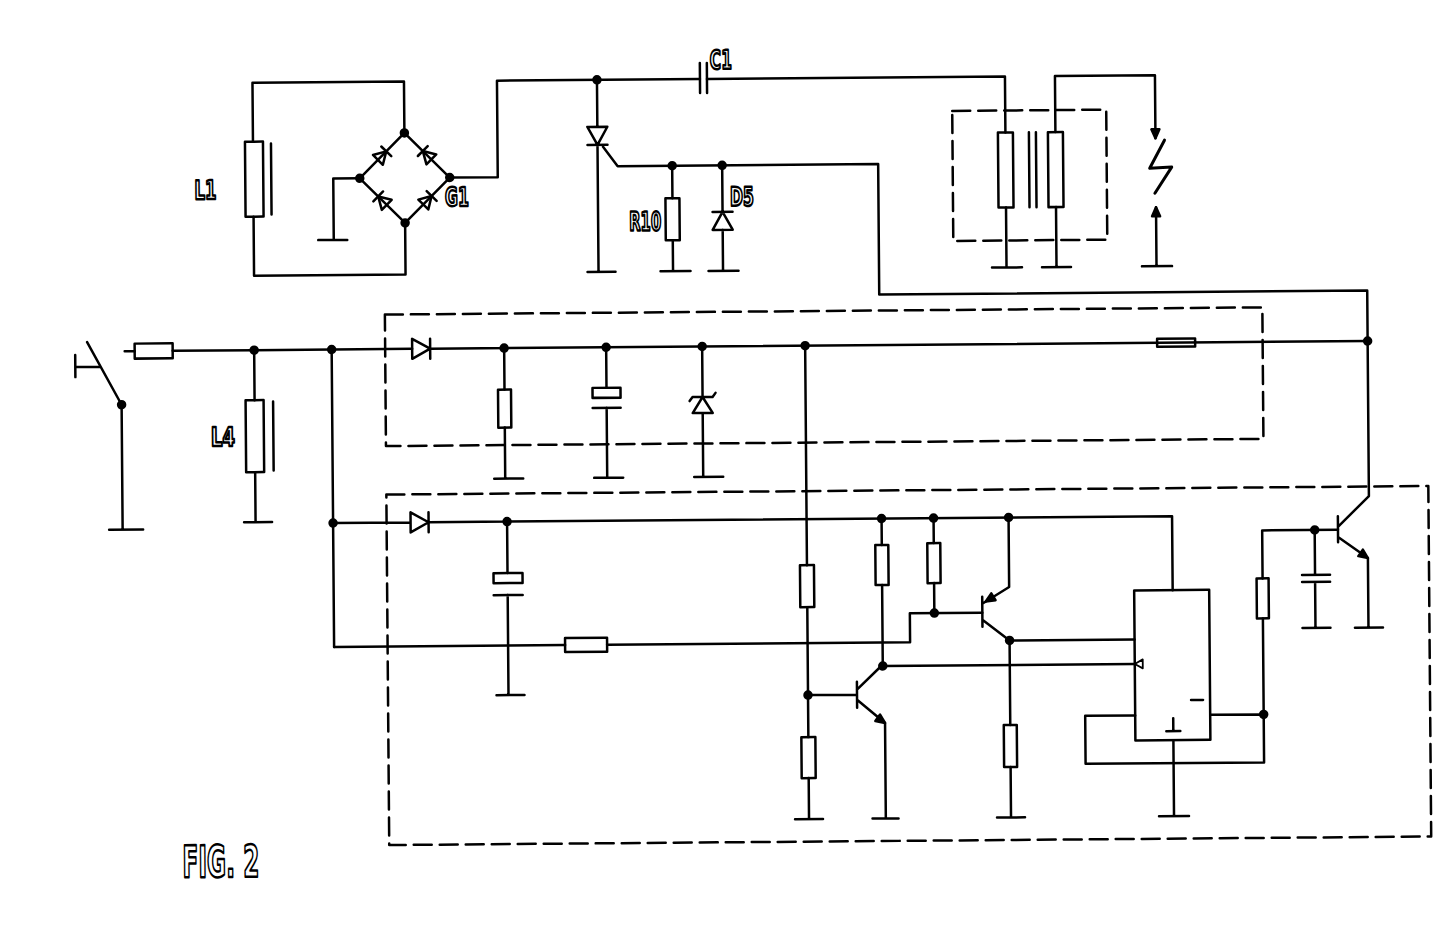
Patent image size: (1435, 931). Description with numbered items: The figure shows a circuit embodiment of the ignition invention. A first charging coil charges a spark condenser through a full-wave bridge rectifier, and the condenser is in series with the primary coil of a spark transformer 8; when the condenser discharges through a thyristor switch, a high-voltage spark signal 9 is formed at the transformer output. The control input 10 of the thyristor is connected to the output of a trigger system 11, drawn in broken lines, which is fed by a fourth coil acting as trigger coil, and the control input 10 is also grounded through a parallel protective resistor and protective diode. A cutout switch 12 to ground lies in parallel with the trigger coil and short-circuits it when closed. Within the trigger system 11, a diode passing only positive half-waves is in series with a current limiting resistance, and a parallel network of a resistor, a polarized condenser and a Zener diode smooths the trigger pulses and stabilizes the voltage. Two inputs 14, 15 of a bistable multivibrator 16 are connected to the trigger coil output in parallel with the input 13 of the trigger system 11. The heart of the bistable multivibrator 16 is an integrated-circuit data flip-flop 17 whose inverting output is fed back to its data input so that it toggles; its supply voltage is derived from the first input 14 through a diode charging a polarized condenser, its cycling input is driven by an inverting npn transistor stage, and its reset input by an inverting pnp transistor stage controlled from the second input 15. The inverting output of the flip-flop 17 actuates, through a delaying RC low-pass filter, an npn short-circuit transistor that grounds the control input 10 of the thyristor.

The spark transformer 8 is at (955, 134).
The high-voltage spark signal 9 is at (1170, 156).
The control input of the switch Thy 10 is at (618, 152).
The trigger system 11 is at (494, 311).
The cutout switch 12 is at (121, 338).
The input of the trigger system 13 is at (349, 345).
The first input of the bistable multivibrator 14 is at (362, 517).
The second input of the bistable multivibrator 15 is at (354, 642).
The bistable multivibrator 16 is at (489, 845).
The data flip-flop 17 is at (1185, 746).